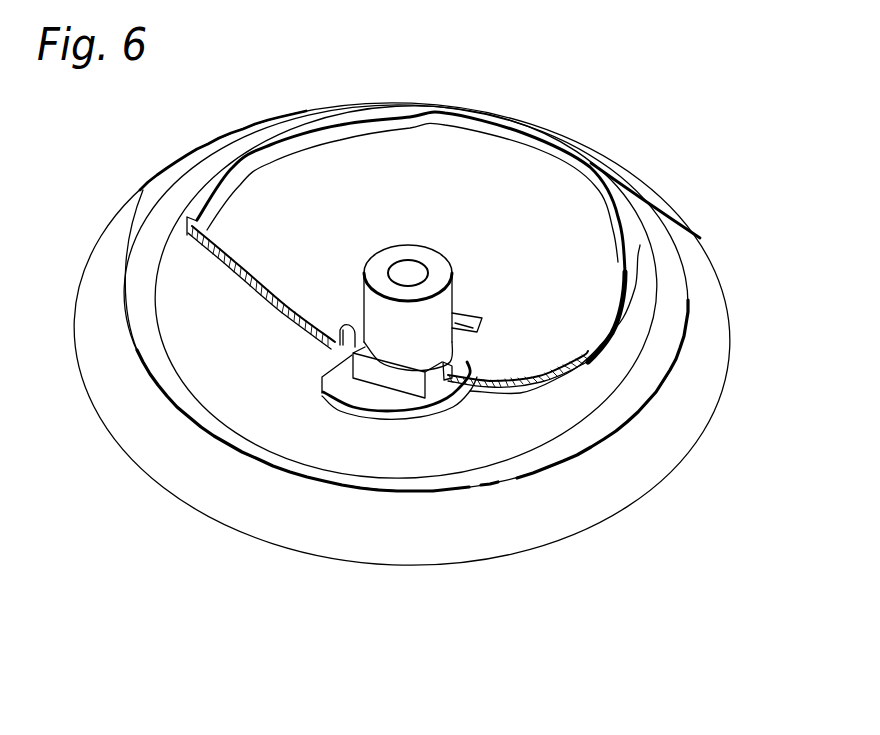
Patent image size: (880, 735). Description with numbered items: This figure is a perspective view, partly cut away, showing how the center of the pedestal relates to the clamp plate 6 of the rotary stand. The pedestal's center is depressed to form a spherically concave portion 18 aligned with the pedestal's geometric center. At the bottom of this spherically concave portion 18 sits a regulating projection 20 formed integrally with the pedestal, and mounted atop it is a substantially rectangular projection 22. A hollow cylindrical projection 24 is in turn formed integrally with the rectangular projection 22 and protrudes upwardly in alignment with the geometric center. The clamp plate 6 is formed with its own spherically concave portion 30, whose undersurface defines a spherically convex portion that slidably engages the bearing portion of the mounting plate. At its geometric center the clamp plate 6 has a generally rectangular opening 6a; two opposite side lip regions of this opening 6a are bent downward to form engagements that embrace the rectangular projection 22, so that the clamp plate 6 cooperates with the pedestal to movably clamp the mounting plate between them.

The clamp plate 6 is at (622, 277).
The rectangular opening 6a is at (472, 313).
The spherically concave portion 18 is at (527, 418).
The regulating projection 20 is at (358, 405).
The rectangular projection 22 is at (403, 387).
The hollow cylindrical projection 24 is at (418, 342).
The spherically concave portion 30 is at (512, 185).